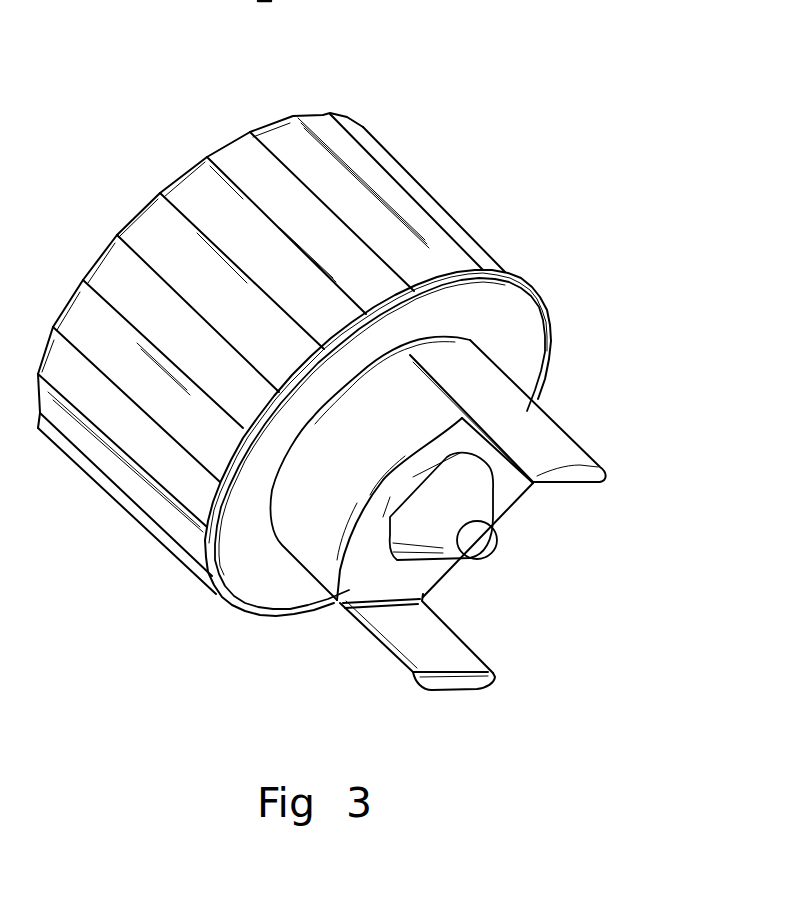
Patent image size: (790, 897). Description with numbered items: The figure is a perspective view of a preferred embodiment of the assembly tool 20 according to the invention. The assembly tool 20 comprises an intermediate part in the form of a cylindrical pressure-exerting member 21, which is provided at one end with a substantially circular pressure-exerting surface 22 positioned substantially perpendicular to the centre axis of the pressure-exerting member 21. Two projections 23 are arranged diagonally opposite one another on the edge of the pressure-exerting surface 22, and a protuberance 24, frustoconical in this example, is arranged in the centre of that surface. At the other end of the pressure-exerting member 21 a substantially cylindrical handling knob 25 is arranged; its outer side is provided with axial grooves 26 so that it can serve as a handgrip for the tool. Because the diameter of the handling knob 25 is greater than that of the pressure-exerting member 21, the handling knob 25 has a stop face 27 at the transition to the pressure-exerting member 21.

The assembly tool 20 is at (443, 152).
The pressure-exerting member 21 is at (423, 410).
The pressure-exerting surface 22 is at (353, 570).
The projections 23 is at (560, 455).
The protuberance 24 is at (468, 505).
The handling knob 25 is at (390, 233).
The axial grooves 26 is at (157, 237).
The stop face 27 is at (513, 338).